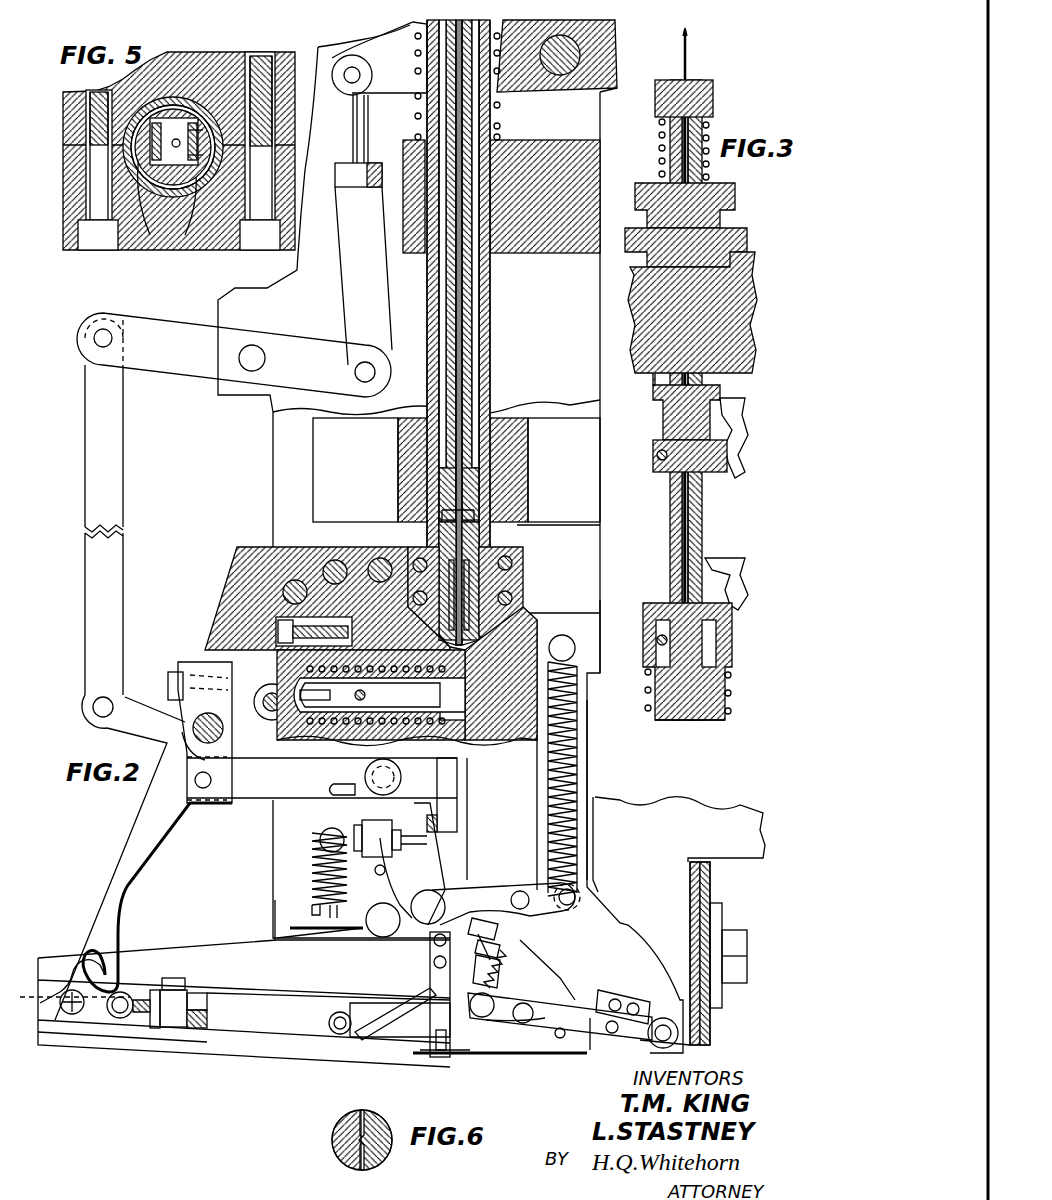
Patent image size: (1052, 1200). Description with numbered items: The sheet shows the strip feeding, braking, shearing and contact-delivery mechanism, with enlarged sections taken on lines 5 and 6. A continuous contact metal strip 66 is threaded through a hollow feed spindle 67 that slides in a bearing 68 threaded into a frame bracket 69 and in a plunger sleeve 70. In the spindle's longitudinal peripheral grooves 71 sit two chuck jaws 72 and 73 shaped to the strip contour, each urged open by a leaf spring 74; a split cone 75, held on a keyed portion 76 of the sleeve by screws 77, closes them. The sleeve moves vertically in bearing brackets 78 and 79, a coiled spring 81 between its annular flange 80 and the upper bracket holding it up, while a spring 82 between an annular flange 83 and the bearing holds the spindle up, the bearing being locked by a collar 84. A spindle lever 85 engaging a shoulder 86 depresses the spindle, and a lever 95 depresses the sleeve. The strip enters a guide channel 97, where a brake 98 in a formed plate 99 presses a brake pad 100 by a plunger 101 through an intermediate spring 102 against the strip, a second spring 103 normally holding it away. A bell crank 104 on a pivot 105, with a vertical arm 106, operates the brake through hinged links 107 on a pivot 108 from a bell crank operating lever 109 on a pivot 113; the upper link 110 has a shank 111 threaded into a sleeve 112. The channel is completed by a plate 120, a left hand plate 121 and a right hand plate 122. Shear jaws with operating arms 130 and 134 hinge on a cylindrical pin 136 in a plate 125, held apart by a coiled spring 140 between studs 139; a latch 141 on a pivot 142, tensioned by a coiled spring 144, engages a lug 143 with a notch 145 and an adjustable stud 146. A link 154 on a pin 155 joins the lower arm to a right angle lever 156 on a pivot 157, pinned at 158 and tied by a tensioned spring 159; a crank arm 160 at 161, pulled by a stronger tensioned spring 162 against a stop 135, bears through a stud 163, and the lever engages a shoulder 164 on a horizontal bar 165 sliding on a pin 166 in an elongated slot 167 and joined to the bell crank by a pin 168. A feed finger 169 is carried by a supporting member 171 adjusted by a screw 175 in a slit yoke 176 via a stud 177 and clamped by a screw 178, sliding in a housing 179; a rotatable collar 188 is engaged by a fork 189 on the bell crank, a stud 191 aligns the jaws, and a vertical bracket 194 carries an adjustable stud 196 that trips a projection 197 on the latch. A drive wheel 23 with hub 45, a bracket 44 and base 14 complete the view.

In FIG. 2, the section line 5— 5 is at (397, 565).
In FIG. 2, the section line 6— 6 is at (470, 660).
In FIG. 2, the base frame 14 is at (305, 1033).
In FIG. 2, the drive wheel 23 is at (712, 1012).
In FIG. 2, the bracket 44 is at (712, 815).
In FIG. 2, the hub 45 is at (712, 1045).
In FIG. 5, the contact metal strip 66 is at (177, 138).
In FIG. 3, the contact metal strip 66 is at (690, 48).
In FIG. 2, the contact metal strip 66 is at (440, 60).
In FIG. 5, the hollow feed spindle 67 is at (220, 160).
In FIG. 3, the hollow feed spindle 67 is at (703, 535).
In FIG. 2, the hollow feed spindle 67 is at (478, 120).
In FIG. 3, the bearing 68 is at (720, 195).
In FIG. 3, the frame bracket 69 is at (735, 310).
In FIG. 5, the plunger sleeve 70 is at (185, 230).
In FIG. 3, the plunger sleeve 70 is at (725, 708).
In FIG. 2, the plunger sleeve 70 is at (494, 138).
In FIG. 5, the longitudinal peripheral grooves 71 is at (150, 238).
In FIG. 2, the longitudinal peripheral grooves 71 is at (477, 528).
In FIG. 5, the chuck jaw 72 is at (205, 150).
In FIG. 6, the chuck jaw 72 is at (378, 1122).
In FIG. 2, the chuck jaw 72 is at (480, 558).
In FIG. 5, the chuck jaw 73 is at (118, 88).
In FIG. 6, the chuck jaw 73 is at (345, 1132).
In FIG. 2, the chuck jaw 73 is at (452, 560).
In FIG. 5, the leaf spring 74 is at (165, 122).
In FIG. 2, the leaf spring 74 is at (477, 577).
In FIG. 5, the split cone 75 is at (276, 60).
In FIG. 2, the split cone 75 is at (503, 628).
In FIG. 2, the keyed portion 76 is at (466, 583).
In FIG. 5, the screws 77 is at (95, 240).
In FIG. 2, the screws 77 is at (518, 608).
In FIG. 2, the bearing bracket 78 is at (600, 135).
In FIG. 2, the bearing bracket 79 is at (510, 420).
In FIG. 3, the annular flange 80 is at (735, 645).
In FIG. 3, the coiled spring 81 is at (730, 675).
In FIG. 2, the coiled spring 81 is at (497, 105).
In FIG. 3, the spring 82 is at (712, 128).
In FIG. 3, the annular flange 83 is at (700, 82).
In FIG. 3, the collar 84 is at (730, 240).
In FIG. 3, the spindle lever 85 is at (735, 410).
In FIG. 3, the shoulder 86 is at (722, 472).
In FIG. 3, the lever 95 is at (720, 575).
In FIG. 2, the guide channel 97 is at (470, 728).
In FIG. 2, the brake 98 is at (362, 738).
In FIG. 2, the formed plate 99 is at (348, 588).
In FIG. 2, the brake pad 100 is at (455, 702).
In FIG. 2, the plunger 101 is at (285, 712).
In FIG. 2, the intermediate spring 102 is at (410, 742).
In FIG. 2, the second spring 103 is at (285, 645).
In FIG. 2, the bell crank 104 is at (148, 798).
In FIG. 2, the pivot 105 is at (182, 716).
In FIG. 2, the vertical arm 106 is at (210, 668).
In FIG. 2, the hinged links 107 is at (152, 335).
In FIG. 2, the pivot 108 is at (255, 348).
In FIG. 2, the bell crank operating lever 109 is at (405, 48).
In FIG. 2, the upper link 110 is at (362, 170).
In FIG. 2, the shank 111 is at (355, 116).
In FIG. 2, the sleeve 112 is at (355, 282).
In FIG. 2, the pivot 113 is at (562, 78).
In FIG. 2, the plate 120 is at (602, 650).
In FIG. 2, the left hand plate 121 is at (275, 845).
In FIG. 2, the right hand plate 122 is at (565, 753).
In FIG. 2, the plate 125 is at (590, 775).
In FIG. 2, the operating arm 130 is at (577, 996).
In FIG. 2, the operating arm 134 is at (586, 1012).
In FIG. 2, the stop 135 is at (356, 840).
In FIG. 2, the cylindrical pin 136 is at (663, 1020).
In FIG. 2, the stud 139 is at (612, 1036).
In FIG. 2, the coiled spring 140 is at (668, 1046).
In FIG. 2, the latch 141 is at (505, 955).
In FIG. 2, the pivot 142 is at (482, 1020).
In FIG. 2, the lug 143 is at (430, 992).
In FIG. 2, the coiled spring 144 is at (528, 1020).
In FIG. 2, the notch 145 is at (502, 990).
In FIG. 2, the adjustable stud 146 is at (500, 928).
In FIG. 2, the link 154 is at (565, 975).
In FIG. 2, the pin 155 is at (523, 1026).
In FIG. 2, the right angle lever 156 is at (478, 890).
In FIG. 2, the pivot 157 is at (432, 905).
In FIG. 2, the pin 158 is at (520, 893).
In FIG. 2, the tensioned spring 159 is at (595, 800).
In FIG. 2, the crank arm 160 is at (340, 930).
In FIG. 2, the pivot 161 is at (383, 937).
In FIG. 2, the tensioned spring 162 is at (312, 880).
In FIG. 2, the stud 163 is at (402, 832).
In FIG. 2, the shoulder 164 is at (455, 814).
In FIG. 2, the horizontal bar 165 is at (457, 790).
In FIG. 2, the pin 166 is at (372, 766).
In FIG. 2, the elongated slot 167 is at (340, 792).
In FIG. 2, the pin 168 is at (205, 792).
In FIG. 2, the feed finger 169 is at (400, 1047).
In FIG. 2, the supporting member 171 is at (245, 1040).
In FIG. 2, the screw 175 is at (152, 978).
In FIG. 2, the slit yoke 176 is at (178, 1035).
In FIG. 2, the stud 177 is at (120, 1020).
In FIG. 2, the screw 178 is at (170, 978).
In FIG. 2, the housing 179 is at (100, 1048).
In FIG. 2, the rotatable collar 188 is at (72, 1016).
In FIG. 2, the fork 189 is at (95, 945).
In FIG. 2, the stud 191 is at (340, 1012).
In FIG. 2, the vertical bracket 194 is at (468, 1060).
In FIG. 2, the adjustable stud 196 is at (455, 1060).
In FIG. 2, the projection 197 is at (432, 1010).